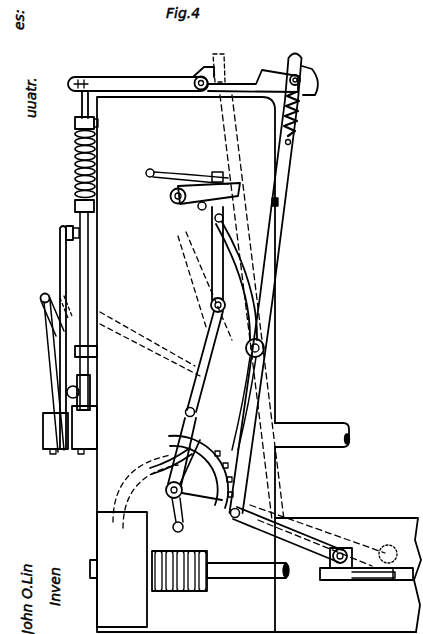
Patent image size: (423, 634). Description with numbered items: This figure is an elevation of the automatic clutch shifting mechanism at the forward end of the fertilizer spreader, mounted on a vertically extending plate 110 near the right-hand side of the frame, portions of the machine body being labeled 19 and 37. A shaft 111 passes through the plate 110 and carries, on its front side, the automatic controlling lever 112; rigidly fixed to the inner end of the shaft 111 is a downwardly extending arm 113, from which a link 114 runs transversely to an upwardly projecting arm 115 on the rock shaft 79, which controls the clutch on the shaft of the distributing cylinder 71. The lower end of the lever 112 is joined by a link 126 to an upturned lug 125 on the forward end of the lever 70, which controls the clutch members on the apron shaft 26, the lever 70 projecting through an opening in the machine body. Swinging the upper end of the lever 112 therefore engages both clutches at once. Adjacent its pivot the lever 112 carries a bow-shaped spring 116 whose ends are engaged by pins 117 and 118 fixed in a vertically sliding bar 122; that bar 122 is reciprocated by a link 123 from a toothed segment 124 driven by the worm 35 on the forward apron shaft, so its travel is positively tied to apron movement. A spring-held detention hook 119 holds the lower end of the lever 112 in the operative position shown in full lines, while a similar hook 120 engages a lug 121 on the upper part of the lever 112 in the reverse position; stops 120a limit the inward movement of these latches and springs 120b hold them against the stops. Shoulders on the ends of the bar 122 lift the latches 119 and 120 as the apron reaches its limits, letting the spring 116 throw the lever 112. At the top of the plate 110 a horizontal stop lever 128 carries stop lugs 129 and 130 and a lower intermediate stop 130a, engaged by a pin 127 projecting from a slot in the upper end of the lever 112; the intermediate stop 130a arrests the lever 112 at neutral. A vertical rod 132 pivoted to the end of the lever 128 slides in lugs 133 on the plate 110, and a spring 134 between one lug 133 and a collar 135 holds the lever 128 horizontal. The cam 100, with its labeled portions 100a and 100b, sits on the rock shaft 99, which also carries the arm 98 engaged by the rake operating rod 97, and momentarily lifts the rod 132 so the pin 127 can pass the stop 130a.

The machine frame 19 is at (414, 475).
The apron shaft 26 is at (413, 427).
The worm 35 is at (180, 592).
The shaft 37 is at (248, 584).
The lever 70 is at (371, 581).
The distributing cylinder 71 is at (422, 272).
The rock shaft 79 is at (67, 392).
The operating rod 97 is at (58, 228).
The arm 98 is at (59, 249).
The rock shaft 99 is at (336, 424).
The cam 100 is at (80, 452).
The block portion 100a is at (78, 404).
The block portion 100b is at (75, 353).
The plate 110 is at (274, 333).
The shaft 111 is at (265, 351).
The automatic controlling lever 112 is at (272, 247).
The downwardly extending arm 113 is at (207, 343).
The link 114 is at (47, 292).
The upwardly projecting arm 115 is at (52, 341).
The bow-shaped spring 116 is at (166, 466).
The pin 117 is at (224, 218).
The pin 118 is at (186, 412).
The detention hook 119 is at (240, 526).
The spring-held hook 120 is at (243, 190).
The stops 120a is at (197, 207).
The springs 120b is at (160, 168).
The lug 121 is at (280, 202).
The sliding bar 122 is at (212, 214).
The link 123 is at (196, 392).
The toothed segment 124 is at (168, 500).
The upturned lug 125 is at (362, 552).
The link 126 is at (310, 554).
The pin 127 is at (302, 81).
The stop lever 128 is at (158, 78).
The stop lug 129 is at (317, 70).
The stop lug 130 is at (210, 72).
The intermediate stop 130a is at (262, 72).
The vertical rod 132 is at (81, 107).
The lugs 133 is at (75, 126).
The spring 134 is at (74, 165).
The collar 135 is at (75, 207).